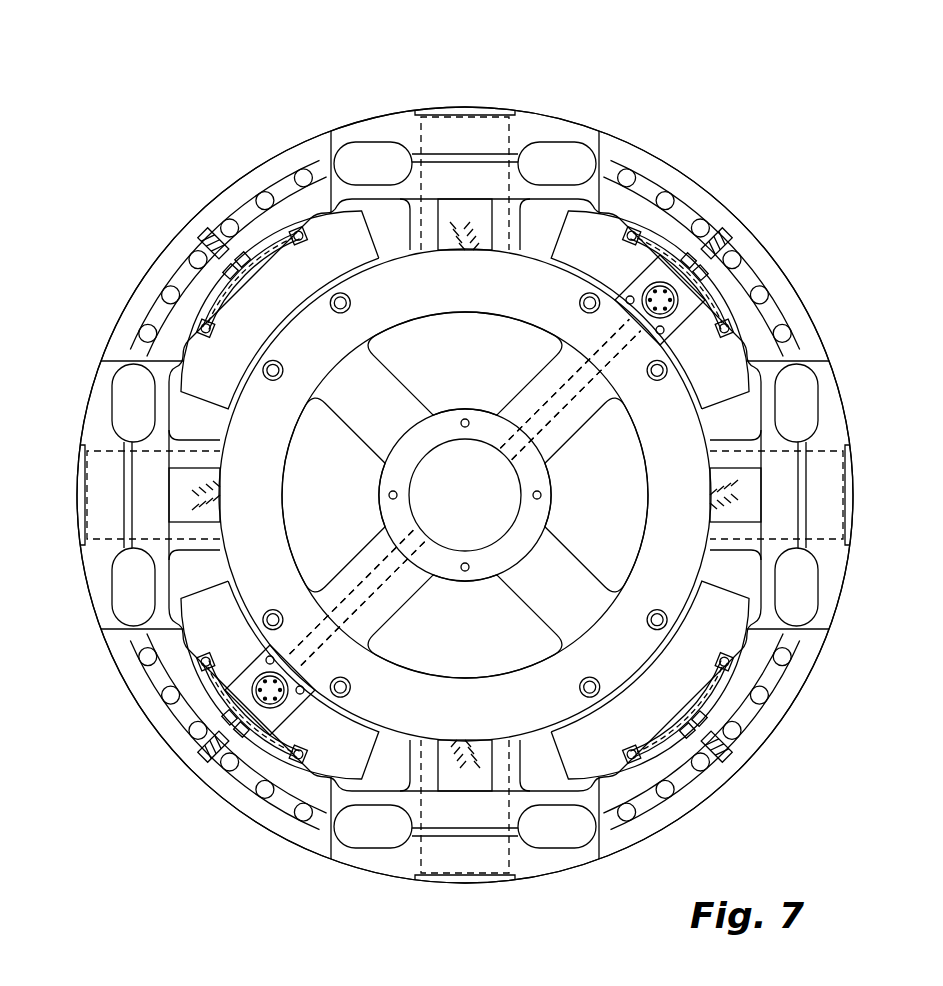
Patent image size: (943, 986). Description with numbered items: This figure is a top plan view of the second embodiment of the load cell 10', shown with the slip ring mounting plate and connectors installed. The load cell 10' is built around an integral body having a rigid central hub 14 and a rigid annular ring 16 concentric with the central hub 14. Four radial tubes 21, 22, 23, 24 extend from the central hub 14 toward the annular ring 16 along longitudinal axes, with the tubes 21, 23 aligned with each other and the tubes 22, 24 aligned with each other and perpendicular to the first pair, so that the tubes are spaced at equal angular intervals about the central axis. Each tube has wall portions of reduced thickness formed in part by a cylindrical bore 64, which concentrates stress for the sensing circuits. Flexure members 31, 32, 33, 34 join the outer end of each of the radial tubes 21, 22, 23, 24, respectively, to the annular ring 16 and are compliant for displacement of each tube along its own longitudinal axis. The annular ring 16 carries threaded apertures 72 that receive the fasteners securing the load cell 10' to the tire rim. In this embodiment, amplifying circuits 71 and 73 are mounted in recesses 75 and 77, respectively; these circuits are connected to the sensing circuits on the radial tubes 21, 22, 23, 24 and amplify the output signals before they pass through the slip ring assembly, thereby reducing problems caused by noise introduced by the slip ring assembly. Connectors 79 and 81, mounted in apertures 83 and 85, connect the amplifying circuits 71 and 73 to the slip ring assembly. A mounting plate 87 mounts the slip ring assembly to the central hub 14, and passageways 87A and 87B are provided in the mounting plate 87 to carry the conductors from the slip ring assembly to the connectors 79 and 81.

The load cell 10' is at (465, 449).
The central hub 14 is at (350, 714).
The annular ring 16 is at (758, 252).
The radial tube 21 is at (522, 222).
The radial tube 22 is at (734, 440).
The radial tube 23 is at (410, 763).
The radial tube 24 is at (210, 436).
The flexure member 31 is at (549, 158).
The flexure member 32 is at (812, 587).
The flexure member 33 is at (560, 832).
The flexure member 34 is at (135, 594).
The cylindrical bore 64 is at (420, 843).
The amplifying circuit 71 is at (375, 230).
The threaded apertures 72 is at (210, 238).
The amplifying circuit 73 is at (716, 593).
The recess 75 is at (205, 396).
The recess 77 is at (622, 774).
The connector 79 is at (680, 333).
The connector 81 is at (243, 668).
The aperture 83 is at (740, 372).
The aperture 85 is at (343, 776).
The mounting plate 87 is at (770, 470).
The passageway 87A is at (566, 450).
The passageway 87B is at (387, 588).